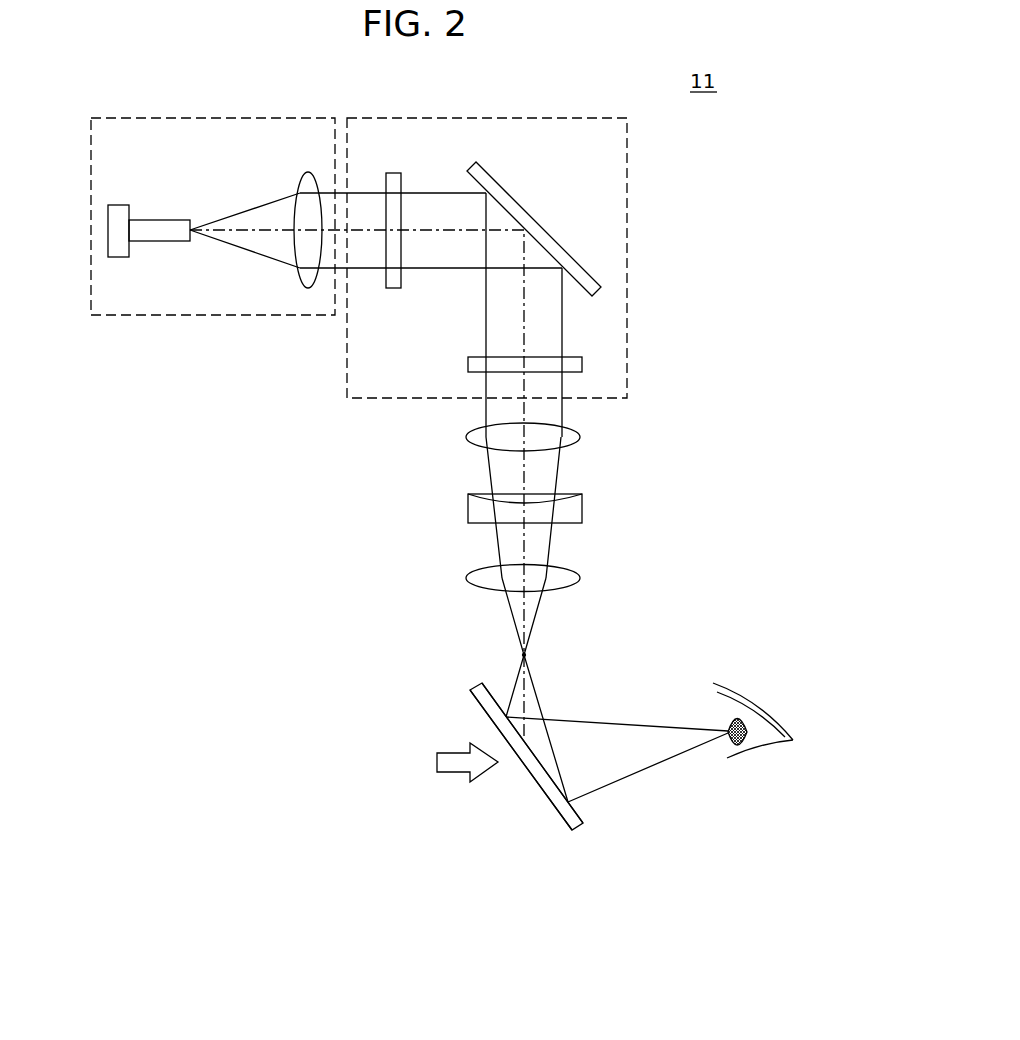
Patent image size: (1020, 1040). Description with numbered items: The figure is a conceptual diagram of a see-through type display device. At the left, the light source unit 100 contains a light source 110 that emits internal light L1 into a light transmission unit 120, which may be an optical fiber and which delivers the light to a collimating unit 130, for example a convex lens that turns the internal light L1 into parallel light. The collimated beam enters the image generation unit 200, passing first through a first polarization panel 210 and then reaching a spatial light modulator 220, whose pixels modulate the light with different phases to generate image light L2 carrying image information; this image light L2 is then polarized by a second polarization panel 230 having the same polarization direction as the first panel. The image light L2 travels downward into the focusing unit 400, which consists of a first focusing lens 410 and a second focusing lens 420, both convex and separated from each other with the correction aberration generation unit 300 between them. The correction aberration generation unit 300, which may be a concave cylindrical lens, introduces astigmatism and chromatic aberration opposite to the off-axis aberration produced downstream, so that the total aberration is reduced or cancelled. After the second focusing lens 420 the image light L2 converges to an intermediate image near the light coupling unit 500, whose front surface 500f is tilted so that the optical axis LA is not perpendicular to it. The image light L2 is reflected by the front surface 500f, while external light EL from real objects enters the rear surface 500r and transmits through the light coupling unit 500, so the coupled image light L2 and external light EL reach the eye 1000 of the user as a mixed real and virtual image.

The light source unit 100 is at (220, 118).
The light source 110 is at (118, 205).
The light transmission unit 120 is at (169, 220).
The collimating unit 130 is at (310, 175).
The internal light L1 is at (248, 250).
The image generation unit 200 is at (503, 118).
The first polarization panel 210 is at (392, 173).
The spatial light modulator 220 is at (492, 171).
The second polarization panel 230 is at (582, 365).
The image light L2 is at (562, 323).
The correction aberration generation unit 300 is at (468, 507).
The focusing unit 400 is at (572, 507).
The first focusing lens 410 is at (582, 437).
The second focusing lens 420 is at (573, 563).
The optical axis LA is at (528, 678).
The light coupling unit 500 is at (565, 786).
The front surface 500f is at (583, 818).
The rear surface 500r is at (558, 816).
The external light EL is at (452, 772).
The eye 1000 is at (765, 762).